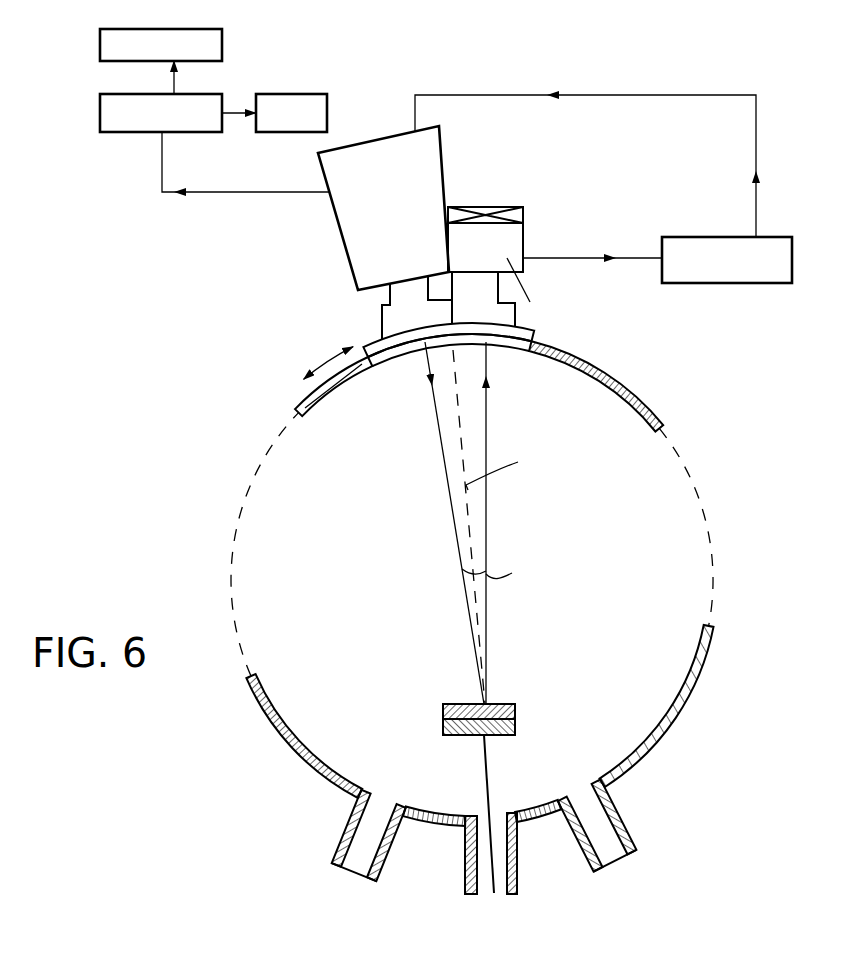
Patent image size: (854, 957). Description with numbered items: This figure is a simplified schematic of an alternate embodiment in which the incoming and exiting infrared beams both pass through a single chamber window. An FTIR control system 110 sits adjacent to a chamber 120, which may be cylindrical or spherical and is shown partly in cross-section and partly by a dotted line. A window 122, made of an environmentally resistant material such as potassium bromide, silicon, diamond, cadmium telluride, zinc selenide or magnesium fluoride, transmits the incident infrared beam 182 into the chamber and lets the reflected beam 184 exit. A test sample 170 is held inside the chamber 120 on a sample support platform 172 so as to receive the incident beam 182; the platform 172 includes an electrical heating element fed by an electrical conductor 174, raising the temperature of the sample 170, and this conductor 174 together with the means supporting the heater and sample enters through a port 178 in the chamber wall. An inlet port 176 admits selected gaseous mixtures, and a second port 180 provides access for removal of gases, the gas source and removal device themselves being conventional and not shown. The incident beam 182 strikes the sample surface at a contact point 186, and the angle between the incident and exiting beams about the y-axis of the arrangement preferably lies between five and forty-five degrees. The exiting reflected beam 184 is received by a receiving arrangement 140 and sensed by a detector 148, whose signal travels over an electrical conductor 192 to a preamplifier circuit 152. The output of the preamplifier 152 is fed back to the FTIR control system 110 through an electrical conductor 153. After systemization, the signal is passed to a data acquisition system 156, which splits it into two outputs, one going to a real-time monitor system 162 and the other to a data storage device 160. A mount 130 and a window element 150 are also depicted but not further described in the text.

The FTIR control system 110 is at (337, 222).
The chamber 120 is at (300, 405).
The window 122 is at (405, 348).
The spectrometer mount 130 is at (388, 297).
The receiving arrangement 140 is at (550, 250).
The detector 148 is at (524, 246).
The detector window 150 is at (524, 212).
The preamplifier circuit 152 is at (715, 284).
The electrical conductor 153 is at (626, 95).
The data acquisition system 156 is at (187, 133).
The data storage device 160 is at (300, 93).
The real-time monitor system 162 is at (224, 44).
The test sample 170 is at (484, 716).
The sample support platform 172 is at (456, 737).
The electrical conductor 174 is at (489, 787).
The inlet port 176 is at (380, 867).
The port 178 is at (538, 868).
The second port 180 is at (628, 828).
The incident infrared beam 182 is at (436, 496).
The reflected beam 184 is at (531, 523).
The contact point 186 is at (471, 697).
The electrical conductor 192 is at (598, 256).